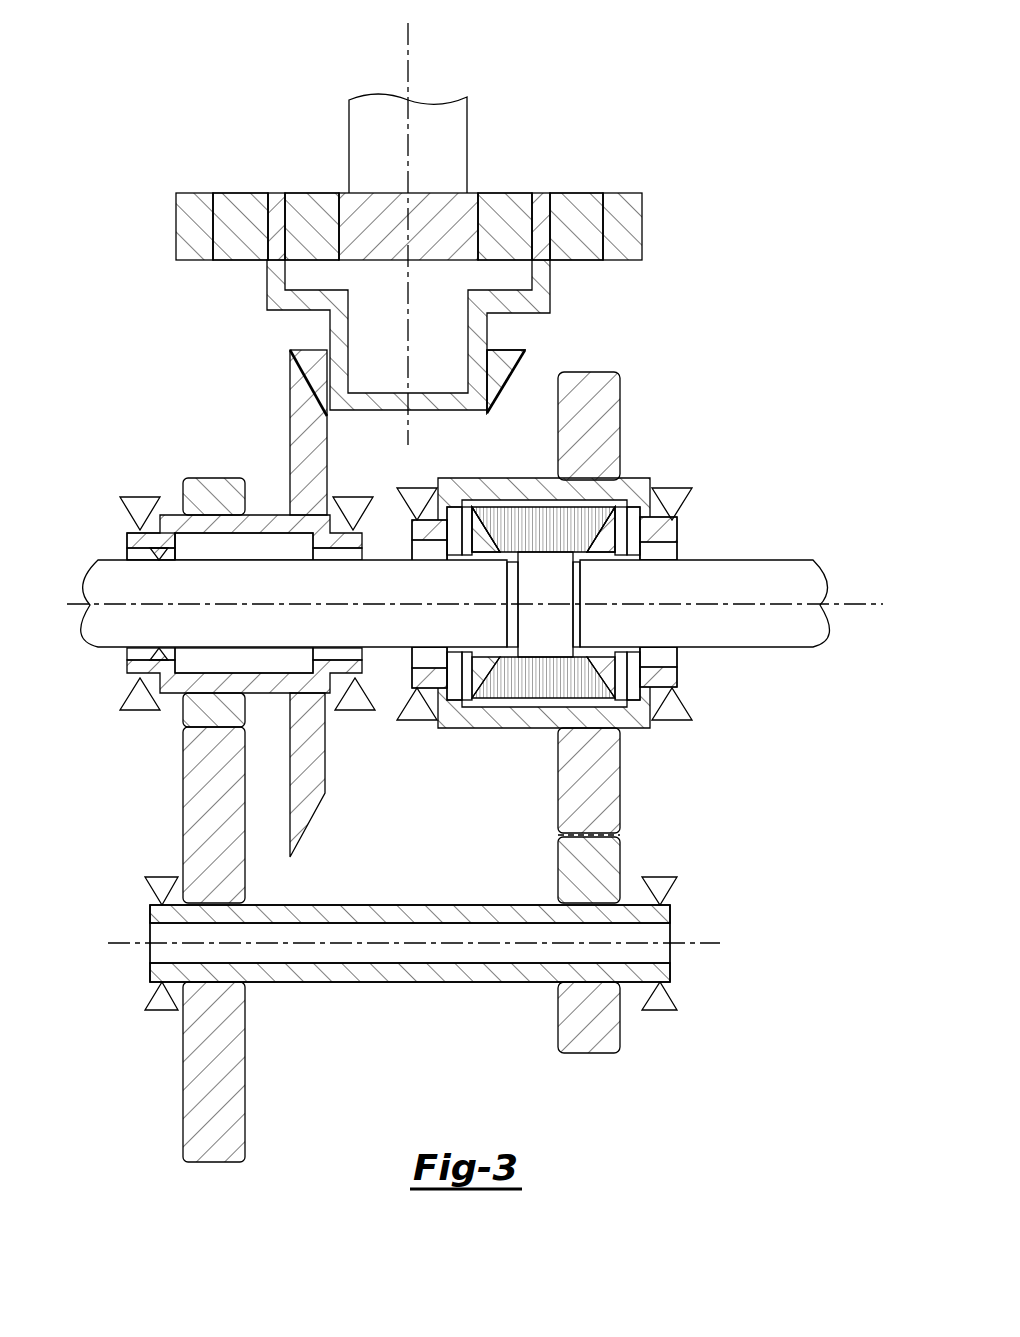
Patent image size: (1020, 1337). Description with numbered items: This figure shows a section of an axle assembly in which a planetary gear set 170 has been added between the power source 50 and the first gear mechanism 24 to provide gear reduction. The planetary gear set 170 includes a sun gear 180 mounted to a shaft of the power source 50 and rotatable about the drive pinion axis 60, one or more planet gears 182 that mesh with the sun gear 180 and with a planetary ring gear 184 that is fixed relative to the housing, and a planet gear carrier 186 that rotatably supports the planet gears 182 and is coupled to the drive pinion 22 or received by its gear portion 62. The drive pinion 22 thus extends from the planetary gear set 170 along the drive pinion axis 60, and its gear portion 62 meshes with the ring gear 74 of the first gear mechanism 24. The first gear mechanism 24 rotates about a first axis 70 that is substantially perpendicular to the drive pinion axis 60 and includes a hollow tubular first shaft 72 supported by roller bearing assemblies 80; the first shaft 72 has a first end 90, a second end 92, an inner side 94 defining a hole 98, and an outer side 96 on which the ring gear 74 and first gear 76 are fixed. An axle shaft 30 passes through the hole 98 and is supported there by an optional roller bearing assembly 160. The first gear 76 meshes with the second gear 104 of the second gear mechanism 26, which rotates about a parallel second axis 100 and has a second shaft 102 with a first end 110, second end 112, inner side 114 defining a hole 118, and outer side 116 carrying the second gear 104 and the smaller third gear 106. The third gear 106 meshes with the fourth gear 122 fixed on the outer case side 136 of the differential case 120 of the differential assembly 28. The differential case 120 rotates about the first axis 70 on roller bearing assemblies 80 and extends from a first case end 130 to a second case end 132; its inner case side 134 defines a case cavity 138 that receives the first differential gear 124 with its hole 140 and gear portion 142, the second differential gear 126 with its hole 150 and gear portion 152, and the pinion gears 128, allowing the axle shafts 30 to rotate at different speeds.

The drive pinion 22 is at (510, 375).
The first gear mechanism 24 is at (100, 520).
The second gear mechanism 26 is at (140, 968).
The differential assembly 28 is at (700, 532).
The axle shafts 30 is at (150, 630).
The power source 50 is at (402, 142).
The drive pinion axis 60 is at (408, 55).
The gear portion 62 is at (506, 381).
The first axis 70 is at (866, 604).
The first shaft 72 is at (160, 516).
The ring gear 74 is at (290, 397).
The first gear 76 is at (214, 478).
The roller bearing assemblies 80 is at (138, 515).
The first end 90 is at (127, 680).
The second end 92 is at (358, 668).
The inner side 94 is at (260, 670).
The outer side 96 is at (272, 695).
The hole 98 is at (125, 553).
The second axis 100 is at (703, 943).
The second shaft 102 is at (392, 984).
The second gear 104 is at (213, 1163).
The third gear 106 is at (590, 1054).
The first end 110 is at (150, 910).
The second end 112 is at (672, 910).
The inner side 114 is at (437, 932).
The outer side 116 is at (417, 984).
The hole 118 is at (168, 939).
The differential case 120 is at (525, 729).
The fourth gear 122 is at (588, 372).
The first differential gear 124 is at (490, 677).
The second differential gear 126 is at (596, 677).
The pinion gear 128 is at (560, 544).
The first case end 130 is at (412, 676).
The second case end 132 is at (677, 672).
The inner case side 134 is at (474, 482).
The outer case side 136 is at (517, 482).
The case cavity 138 is at (626, 474).
The first differential gear hole 140 is at (508, 560).
The gear portion 142 is at (486, 529).
The second differential gear hole 150 is at (580, 650).
The gear portion 152 is at (601, 529).
The roller bearing assembly 160 is at (160, 553).
The planetary gear set 170 is at (170, 157).
The sun gear 180 is at (393, 240).
The planet gears 182 is at (253, 193).
The planetary ring gear 184 is at (642, 222).
The planet gear carrier 186 is at (278, 312).